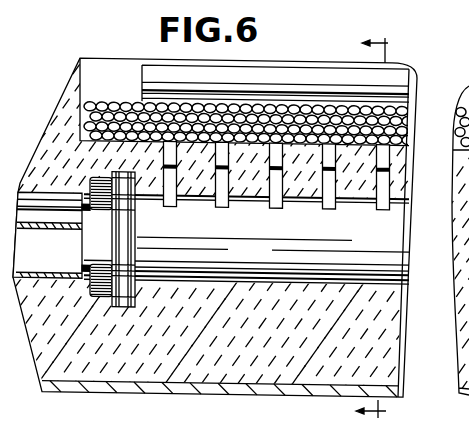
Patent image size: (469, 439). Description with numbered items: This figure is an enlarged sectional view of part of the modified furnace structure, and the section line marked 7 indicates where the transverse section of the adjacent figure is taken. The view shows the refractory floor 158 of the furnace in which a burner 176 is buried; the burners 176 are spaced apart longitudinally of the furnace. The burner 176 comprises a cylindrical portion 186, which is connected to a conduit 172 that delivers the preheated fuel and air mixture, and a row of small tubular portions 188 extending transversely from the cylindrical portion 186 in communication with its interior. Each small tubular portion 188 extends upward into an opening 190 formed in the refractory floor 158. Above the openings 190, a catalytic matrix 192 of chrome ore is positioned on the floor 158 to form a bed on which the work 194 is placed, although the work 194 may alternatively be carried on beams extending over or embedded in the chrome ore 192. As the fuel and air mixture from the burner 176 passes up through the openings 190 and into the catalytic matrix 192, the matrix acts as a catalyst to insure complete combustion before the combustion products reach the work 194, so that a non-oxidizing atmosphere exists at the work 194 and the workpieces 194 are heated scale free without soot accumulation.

The refractory floor 158 is at (176, 367).
The conduit 172 is at (22, 254).
The burner 176 is at (273, 252).
The cylindrical portion 186 is at (250, 279).
The small tubular portion 188 is at (340, 185).
The opening 190 is at (232, 146).
The catalytic matrix 192 is at (98, 102).
The work 194 is at (258, 62).
The section line 7- 7 is at (372, 227).